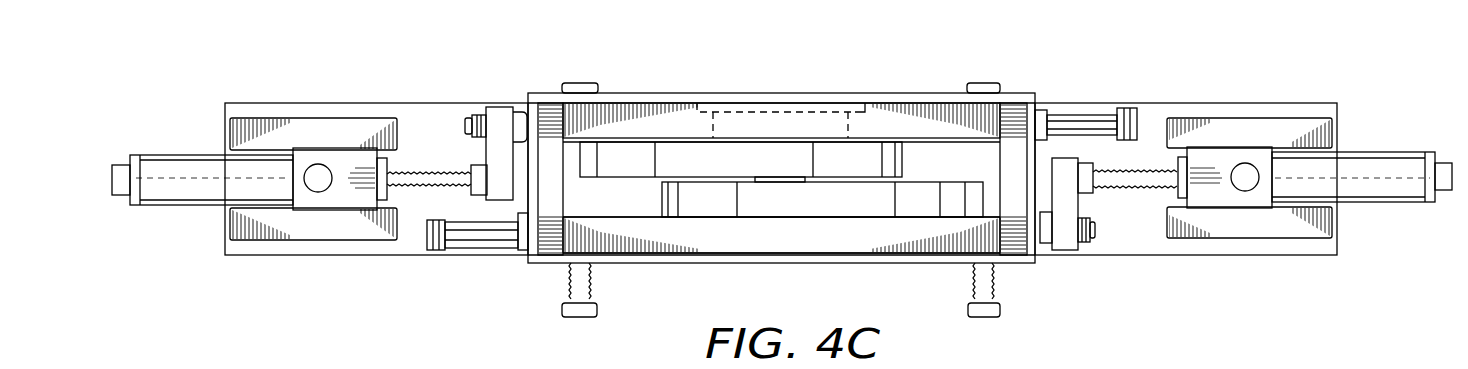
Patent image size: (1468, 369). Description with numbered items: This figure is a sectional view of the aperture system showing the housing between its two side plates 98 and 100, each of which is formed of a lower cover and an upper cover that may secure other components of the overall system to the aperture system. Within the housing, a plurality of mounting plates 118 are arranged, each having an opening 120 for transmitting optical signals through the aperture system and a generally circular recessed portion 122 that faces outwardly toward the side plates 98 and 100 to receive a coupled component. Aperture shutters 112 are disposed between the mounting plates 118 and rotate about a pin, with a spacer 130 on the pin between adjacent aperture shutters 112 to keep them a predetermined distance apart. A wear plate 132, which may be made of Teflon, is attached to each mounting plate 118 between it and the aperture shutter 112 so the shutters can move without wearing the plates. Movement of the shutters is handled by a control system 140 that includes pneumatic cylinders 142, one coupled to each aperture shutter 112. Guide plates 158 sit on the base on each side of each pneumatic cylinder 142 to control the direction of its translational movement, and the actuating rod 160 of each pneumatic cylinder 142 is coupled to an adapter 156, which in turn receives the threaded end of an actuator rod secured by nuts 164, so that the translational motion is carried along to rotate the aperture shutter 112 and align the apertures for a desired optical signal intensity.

The side plate 98 is at (698, 258).
The side plate 100 is at (937, 97).
The aperture shutter 112 is at (662, 198).
The mounting plate 118 is at (643, 112).
The opening 120 is at (784, 110).
The recessed portion 122 is at (855, 100).
The spacer 130 is at (806, 178).
The wear plate 132 is at (913, 132).
The control system 140 is at (172, 236).
The pneumatic cylinder 142 is at (182, 153).
The adapter 156 is at (483, 153).
The guide plate 158 is at (313, 125).
The actuating rod 160 is at (428, 170).
The nut 164 is at (517, 103).